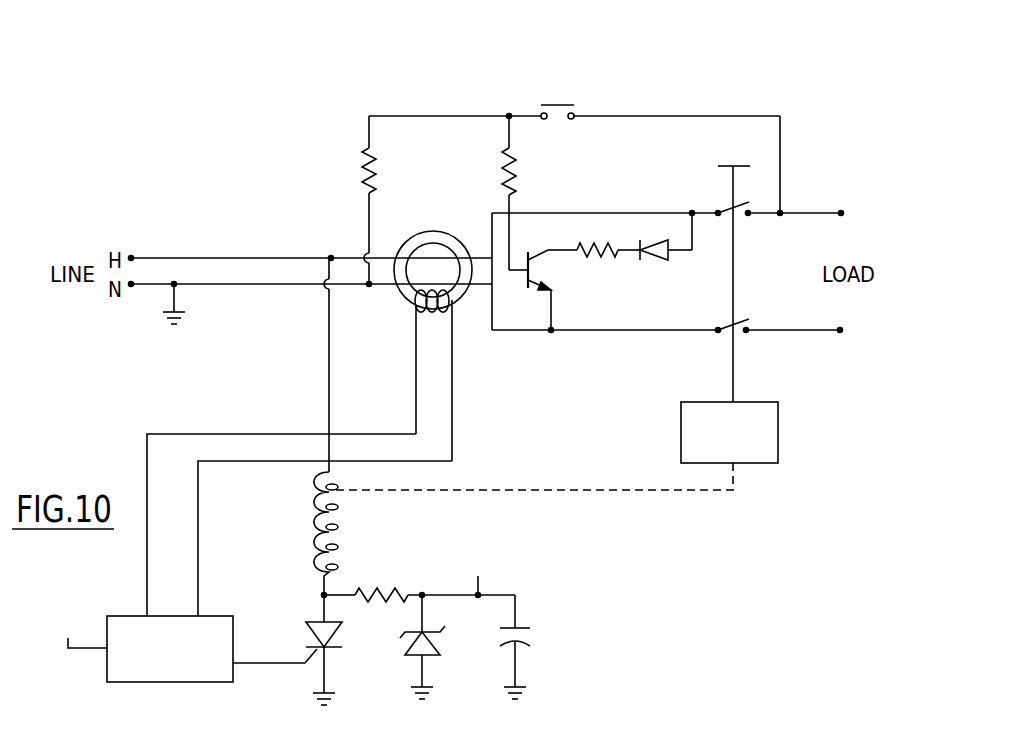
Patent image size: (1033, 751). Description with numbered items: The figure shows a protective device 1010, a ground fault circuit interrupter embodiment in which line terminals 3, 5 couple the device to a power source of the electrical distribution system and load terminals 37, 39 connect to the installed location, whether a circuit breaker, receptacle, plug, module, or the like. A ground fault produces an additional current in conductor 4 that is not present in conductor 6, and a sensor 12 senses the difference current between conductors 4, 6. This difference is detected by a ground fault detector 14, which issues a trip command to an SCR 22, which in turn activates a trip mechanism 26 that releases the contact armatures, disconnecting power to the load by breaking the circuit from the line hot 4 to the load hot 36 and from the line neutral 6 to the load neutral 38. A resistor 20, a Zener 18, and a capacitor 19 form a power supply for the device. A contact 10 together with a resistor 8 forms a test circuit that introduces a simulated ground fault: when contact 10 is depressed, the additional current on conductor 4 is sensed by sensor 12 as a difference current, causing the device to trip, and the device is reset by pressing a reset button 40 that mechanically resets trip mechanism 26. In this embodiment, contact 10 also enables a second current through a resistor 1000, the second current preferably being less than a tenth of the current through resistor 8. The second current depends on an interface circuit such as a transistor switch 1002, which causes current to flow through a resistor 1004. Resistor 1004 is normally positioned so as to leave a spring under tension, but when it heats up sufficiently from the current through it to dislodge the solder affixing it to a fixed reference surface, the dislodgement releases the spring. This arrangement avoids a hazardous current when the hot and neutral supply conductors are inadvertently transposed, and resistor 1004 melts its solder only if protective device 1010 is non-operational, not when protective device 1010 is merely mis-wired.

The line terminal 3 is at (131, 256).
The conductor 4 is at (222, 257).
The line terminal 5 is at (131, 287).
The conductor 6 is at (220, 287).
The resistor 8 is at (368, 172).
The contact 10 is at (556, 104).
The sensor 12 is at (402, 296).
The ground fault detector 14 is at (107, 667).
The Zener 18 is at (435, 656).
The capacitor 19 is at (530, 622).
The resistor 20 is at (377, 584).
The SCR 22 is at (315, 630).
The trip mechanism 26 is at (778, 428).
The load hot 36 is at (790, 212).
The load terminal 37 is at (841, 210).
The load neutral 38 is at (790, 331).
The load terminal 39 is at (840, 333).
The reset button 40 is at (725, 166).
The resistor 1000 is at (508, 170).
The transistor switch 1002 is at (540, 268).
The resistor 1004 is at (598, 246).
The protective device 1010 is at (631, 80).